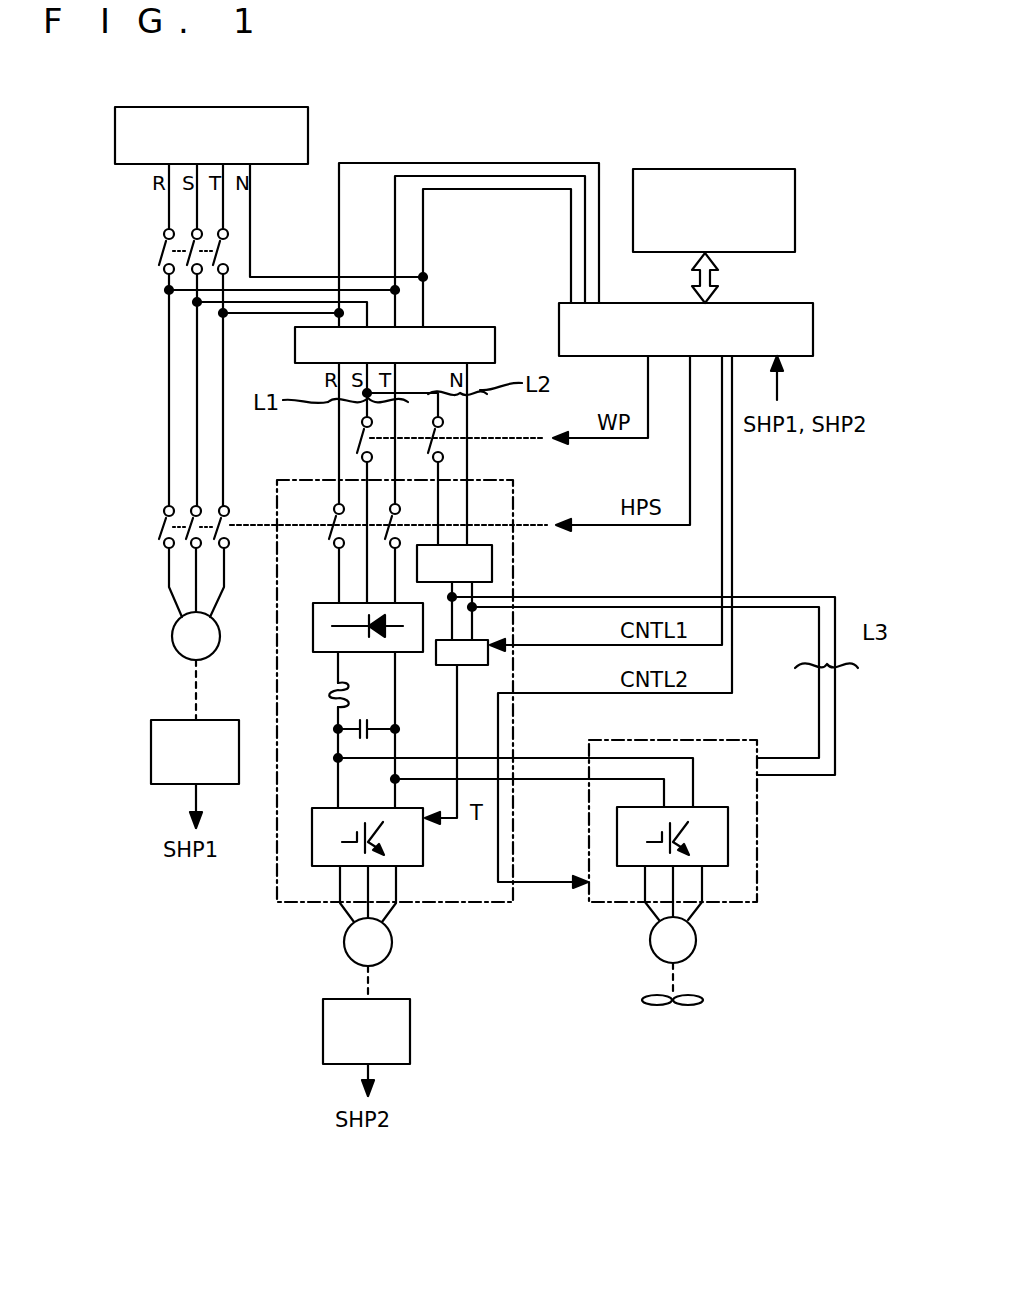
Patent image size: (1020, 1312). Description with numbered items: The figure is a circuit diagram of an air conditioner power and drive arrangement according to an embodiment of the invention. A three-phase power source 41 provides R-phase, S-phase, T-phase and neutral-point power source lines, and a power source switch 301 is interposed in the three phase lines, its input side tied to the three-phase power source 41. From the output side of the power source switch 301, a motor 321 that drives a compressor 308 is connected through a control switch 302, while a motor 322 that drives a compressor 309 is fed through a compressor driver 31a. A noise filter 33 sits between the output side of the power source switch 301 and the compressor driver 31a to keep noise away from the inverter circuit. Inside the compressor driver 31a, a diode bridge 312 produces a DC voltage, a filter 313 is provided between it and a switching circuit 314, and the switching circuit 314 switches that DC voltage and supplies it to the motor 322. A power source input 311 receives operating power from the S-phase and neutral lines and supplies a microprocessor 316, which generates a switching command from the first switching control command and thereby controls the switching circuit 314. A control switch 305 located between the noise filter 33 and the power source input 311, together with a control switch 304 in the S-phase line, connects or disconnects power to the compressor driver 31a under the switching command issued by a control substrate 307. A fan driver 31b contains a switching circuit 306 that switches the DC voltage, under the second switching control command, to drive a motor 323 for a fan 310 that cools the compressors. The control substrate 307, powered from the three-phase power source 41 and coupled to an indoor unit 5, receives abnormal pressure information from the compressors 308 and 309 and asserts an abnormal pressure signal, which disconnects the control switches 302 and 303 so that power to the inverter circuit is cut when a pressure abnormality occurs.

The three-phase power source 41 is at (115, 133).
The power source switch 301 is at (158, 256).
The control switch 302 is at (158, 528).
The control switch 303 is at (328, 530).
The control switch 304 is at (353, 440).
The control switch 305 is at (443, 432).
The switching circuit 306 is at (728, 838).
The control substrate 307 is at (813, 330).
The compressor 308 is at (151, 755).
The compressor 309 is at (323, 1030).
The fan 310 is at (689, 1006).
The power source input 311 is at (492, 575).
The diode bridge 312 is at (415, 652).
The filter 313 is at (322, 705).
The switching circuit 314 is at (423, 830).
The microprocessor 316 is at (488, 662).
The motor 321 is at (172, 638).
The motor 322 is at (344, 944).
The motor 323 is at (650, 942).
The noise filter 33 is at (472, 327).
The indoor unit 5 is at (795, 205).
The compressor driver 31a is at (480, 903).
The fan driver 31b is at (750, 903).